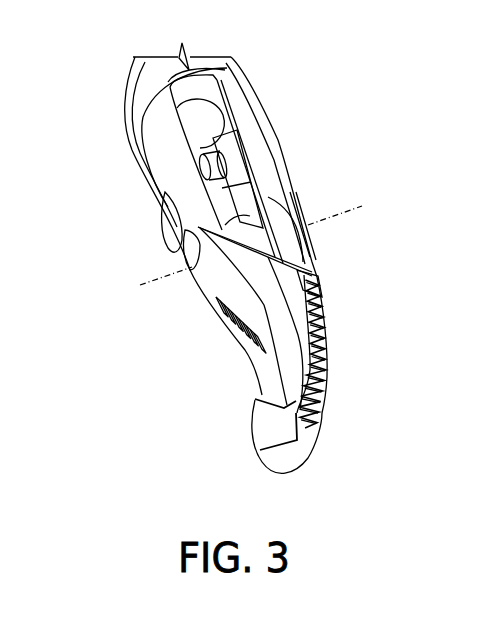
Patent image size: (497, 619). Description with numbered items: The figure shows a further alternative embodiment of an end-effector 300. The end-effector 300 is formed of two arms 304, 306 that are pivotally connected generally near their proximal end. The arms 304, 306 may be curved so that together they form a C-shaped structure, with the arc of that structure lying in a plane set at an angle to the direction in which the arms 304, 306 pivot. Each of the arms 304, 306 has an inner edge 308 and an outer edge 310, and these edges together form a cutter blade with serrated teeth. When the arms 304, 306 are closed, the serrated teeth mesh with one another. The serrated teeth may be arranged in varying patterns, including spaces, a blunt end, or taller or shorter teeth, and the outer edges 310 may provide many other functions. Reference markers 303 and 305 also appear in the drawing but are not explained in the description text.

The tissue removal device 300 is at (98, 62).
The housing edge 303 is at (228, 97).
The jaw 304 is at (265, 396).
The pivot axis 305 is at (343, 213).
The distal tip 306 is at (282, 466).
The serrated gripping surface 308 is at (318, 302).
The outer jaw surface 310 is at (320, 422).